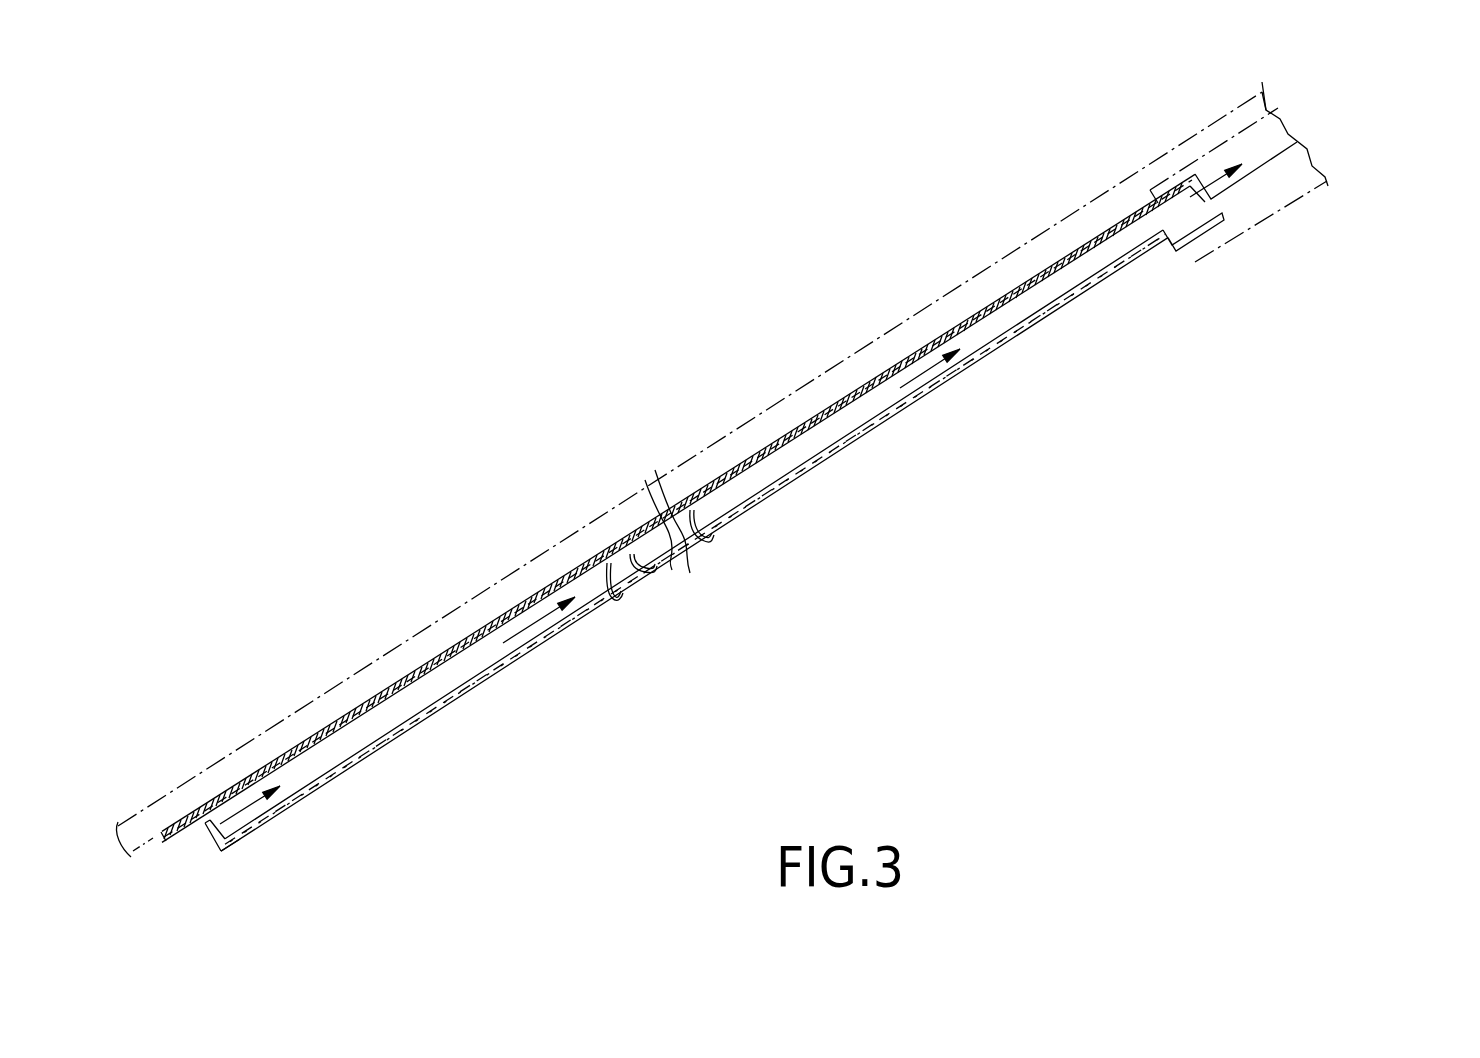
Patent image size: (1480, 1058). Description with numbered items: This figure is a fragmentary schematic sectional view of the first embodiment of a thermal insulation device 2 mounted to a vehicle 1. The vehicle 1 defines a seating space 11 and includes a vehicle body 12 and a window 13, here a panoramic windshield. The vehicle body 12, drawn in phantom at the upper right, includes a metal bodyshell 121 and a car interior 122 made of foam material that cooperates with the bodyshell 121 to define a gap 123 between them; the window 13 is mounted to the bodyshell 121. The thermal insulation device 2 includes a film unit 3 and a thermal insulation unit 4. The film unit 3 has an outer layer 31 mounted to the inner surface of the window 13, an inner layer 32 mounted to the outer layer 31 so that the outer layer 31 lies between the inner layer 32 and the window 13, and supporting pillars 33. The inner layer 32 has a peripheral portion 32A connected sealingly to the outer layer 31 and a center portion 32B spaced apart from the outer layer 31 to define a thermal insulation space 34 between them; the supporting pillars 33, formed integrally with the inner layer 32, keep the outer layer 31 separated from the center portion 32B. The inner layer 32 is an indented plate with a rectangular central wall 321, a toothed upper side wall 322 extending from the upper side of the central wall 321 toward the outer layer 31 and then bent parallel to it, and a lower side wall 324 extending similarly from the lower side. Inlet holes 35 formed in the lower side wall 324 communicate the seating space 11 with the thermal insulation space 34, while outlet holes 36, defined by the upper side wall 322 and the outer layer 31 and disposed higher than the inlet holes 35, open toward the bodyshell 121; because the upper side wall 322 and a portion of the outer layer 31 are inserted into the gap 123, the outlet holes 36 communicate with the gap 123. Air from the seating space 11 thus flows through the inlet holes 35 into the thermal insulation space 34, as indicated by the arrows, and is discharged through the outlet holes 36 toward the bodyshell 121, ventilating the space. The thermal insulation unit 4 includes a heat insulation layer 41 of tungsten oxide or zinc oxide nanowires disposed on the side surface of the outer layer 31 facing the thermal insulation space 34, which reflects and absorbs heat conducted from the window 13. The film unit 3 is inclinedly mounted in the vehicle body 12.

The vehicle 1 is at (925, 276).
The seating space 11 is at (439, 790).
The vehicle body 12 is at (1408, 75).
The bodyshell 121 is at (1280, 120).
The car interior 122 is at (1300, 163).
The gap 123 is at (1307, 148).
The window 13 is at (823, 394).
The thermal insulation device 2 is at (971, 426).
The film unit 3 is at (992, 355).
The outer layer 31 is at (444, 664).
The inner layer 32 is at (455, 702).
The peripheral portion 32A is at (170, 846).
The center portion 32B is at (343, 773).
The central wall 321 is at (520, 655).
The upper side wall 322 is at (1199, 196).
The lower side wall 324 is at (210, 843).
The supporting pillars 33 is at (606, 596).
The thermal insulation space 34 is at (1060, 296).
The inlet holes 35 is at (224, 830).
The outlet holes 36 is at (1188, 186).
The thermal insulation unit 4 is at (483, 616).
The heat insulation layer 41 is at (508, 622).